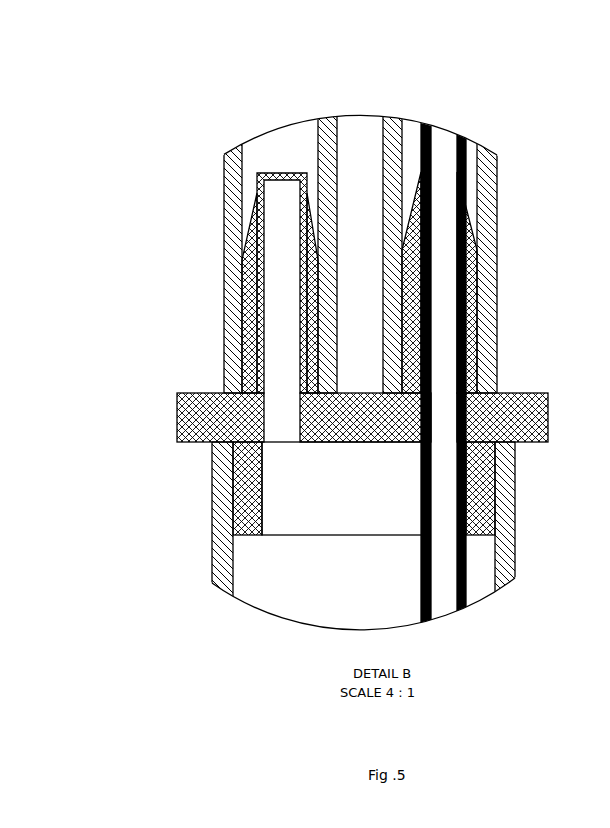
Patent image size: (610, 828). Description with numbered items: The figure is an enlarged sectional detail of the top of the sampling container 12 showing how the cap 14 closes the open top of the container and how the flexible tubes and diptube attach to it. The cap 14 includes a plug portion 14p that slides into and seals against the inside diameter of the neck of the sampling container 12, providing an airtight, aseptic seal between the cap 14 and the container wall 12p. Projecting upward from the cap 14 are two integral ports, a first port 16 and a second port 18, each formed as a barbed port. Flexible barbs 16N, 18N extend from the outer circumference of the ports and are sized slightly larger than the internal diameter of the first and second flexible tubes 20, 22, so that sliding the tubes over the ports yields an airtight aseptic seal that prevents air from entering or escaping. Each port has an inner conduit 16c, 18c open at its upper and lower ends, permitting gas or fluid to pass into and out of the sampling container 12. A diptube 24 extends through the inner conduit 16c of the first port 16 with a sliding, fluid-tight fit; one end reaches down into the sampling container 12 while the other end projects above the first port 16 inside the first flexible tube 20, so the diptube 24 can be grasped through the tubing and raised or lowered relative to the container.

The sampling container 12 is at (212, 548).
The housing port wall 12p is at (517, 468).
The cap 14 is at (178, 412).
The plug portion 14p is at (497, 508).
The first port 16 is at (498, 333).
The flexible barb 16N is at (418, 195).
The inner conduit 16c is at (423, 443).
The second port 18 is at (283, 172).
The flexible barb 18N is at (250, 263).
The inner conduit 18c is at (283, 432).
The first flexible tube 20 is at (500, 207).
The second flexible tube 22 is at (225, 228).
The diptube 24 is at (421, 590).